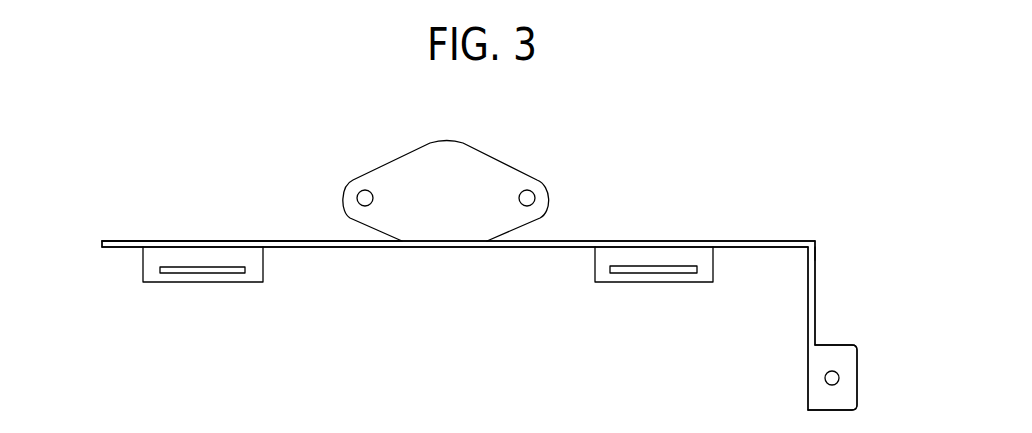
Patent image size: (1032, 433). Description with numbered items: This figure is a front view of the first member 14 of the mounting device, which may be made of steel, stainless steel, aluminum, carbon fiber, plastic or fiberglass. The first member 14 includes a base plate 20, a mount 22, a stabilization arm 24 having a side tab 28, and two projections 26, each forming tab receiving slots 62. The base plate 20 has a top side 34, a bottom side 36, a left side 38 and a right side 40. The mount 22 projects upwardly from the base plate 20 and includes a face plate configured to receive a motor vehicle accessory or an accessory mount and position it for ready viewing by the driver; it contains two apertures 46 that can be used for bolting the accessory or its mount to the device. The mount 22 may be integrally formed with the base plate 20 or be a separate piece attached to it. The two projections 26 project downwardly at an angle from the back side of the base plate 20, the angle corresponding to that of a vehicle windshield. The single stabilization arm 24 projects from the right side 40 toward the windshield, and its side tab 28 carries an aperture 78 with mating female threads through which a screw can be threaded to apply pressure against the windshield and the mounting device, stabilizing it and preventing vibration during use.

The first member 14 is at (809, 233).
The base plate 20 is at (565, 241).
The mount 22 is at (456, 157).
The stabilization arm 24 is at (815, 303).
The projections 26 is at (143, 271).
The side tab 28 is at (857, 398).
The top side 34 is at (277, 241).
The bottom side 36 is at (342, 248).
The left side 38 is at (102, 245).
The right side 40 is at (815, 247).
The apertures 46 is at (365, 190).
The tab receiving slots 62 is at (197, 273).
The aperture 78 is at (839, 378).